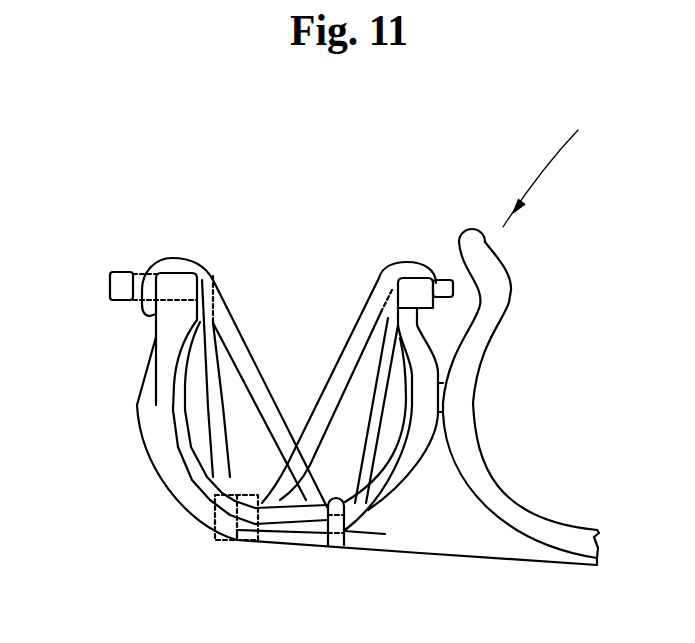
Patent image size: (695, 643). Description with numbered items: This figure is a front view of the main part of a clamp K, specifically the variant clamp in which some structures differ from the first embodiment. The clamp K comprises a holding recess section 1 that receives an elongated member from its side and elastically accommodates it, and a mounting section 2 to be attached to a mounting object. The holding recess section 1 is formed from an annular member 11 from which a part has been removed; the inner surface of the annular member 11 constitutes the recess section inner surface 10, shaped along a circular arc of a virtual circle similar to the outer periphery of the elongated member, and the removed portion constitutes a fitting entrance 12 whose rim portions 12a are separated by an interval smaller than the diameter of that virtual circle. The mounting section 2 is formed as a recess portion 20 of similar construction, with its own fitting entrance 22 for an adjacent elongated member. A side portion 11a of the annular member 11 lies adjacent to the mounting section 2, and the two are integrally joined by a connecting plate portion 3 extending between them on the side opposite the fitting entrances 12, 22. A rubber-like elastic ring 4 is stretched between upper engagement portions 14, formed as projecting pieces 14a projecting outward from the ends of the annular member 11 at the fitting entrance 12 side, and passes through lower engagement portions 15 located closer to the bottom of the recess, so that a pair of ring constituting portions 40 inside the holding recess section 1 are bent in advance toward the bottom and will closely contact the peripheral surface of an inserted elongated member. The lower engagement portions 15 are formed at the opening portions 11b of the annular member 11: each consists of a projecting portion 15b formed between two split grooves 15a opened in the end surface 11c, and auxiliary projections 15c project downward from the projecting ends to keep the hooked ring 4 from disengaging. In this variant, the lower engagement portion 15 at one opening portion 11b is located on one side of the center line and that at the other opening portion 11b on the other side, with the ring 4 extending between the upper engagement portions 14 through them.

The holding recess section 1 is at (247, 447).
The mounting section 2 is at (550, 407).
The recess portion 20 is at (549, 376).
The connecting plate portion 3 is at (478, 538).
The rubber-like elastic ring 4 is at (242, 340).
The ring constituting portions 40 is at (356, 330).
The recess section inner surface 10 is at (207, 420).
The annular member 11 is at (156, 378).
The side portion 11a is at (410, 452).
The opening portions 11b is at (243, 490).
The end surfaces 11c is at (163, 410).
The fitting entrance 12 is at (309, 307).
The rim portions 12a is at (180, 272).
The upper engagement portions 14 is at (140, 272).
The projecting pieces 14a is at (281, 286).
The lower engagement portions 15 is at (218, 540).
The split grooves 15a is at (317, 543).
The projecting portion 15b is at (236, 517).
The auxiliary projections 15c is at (334, 547).
The fitting entrance 22 is at (523, 360).
The clamp K is at (555, 166).